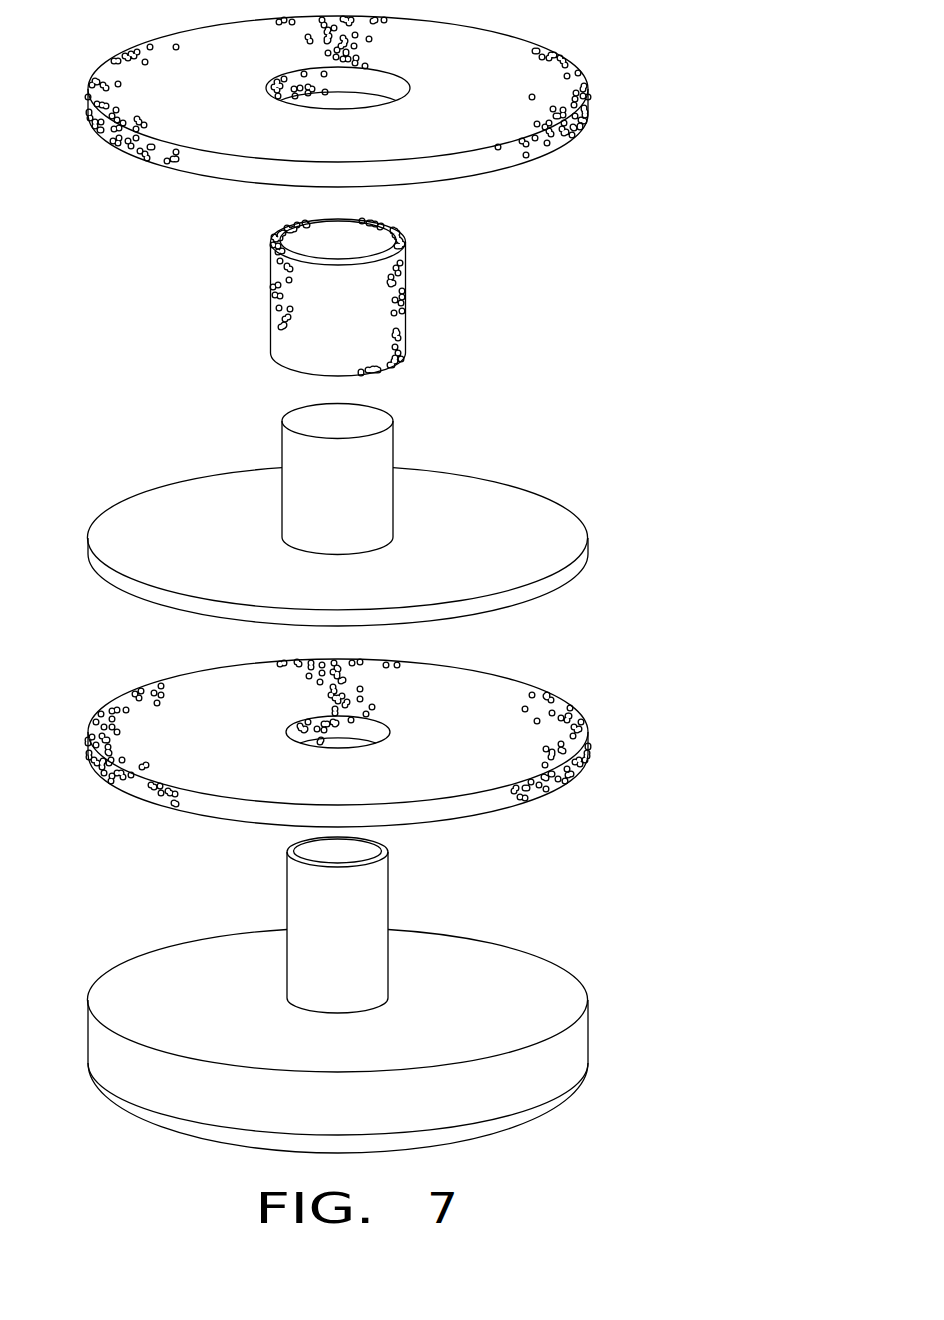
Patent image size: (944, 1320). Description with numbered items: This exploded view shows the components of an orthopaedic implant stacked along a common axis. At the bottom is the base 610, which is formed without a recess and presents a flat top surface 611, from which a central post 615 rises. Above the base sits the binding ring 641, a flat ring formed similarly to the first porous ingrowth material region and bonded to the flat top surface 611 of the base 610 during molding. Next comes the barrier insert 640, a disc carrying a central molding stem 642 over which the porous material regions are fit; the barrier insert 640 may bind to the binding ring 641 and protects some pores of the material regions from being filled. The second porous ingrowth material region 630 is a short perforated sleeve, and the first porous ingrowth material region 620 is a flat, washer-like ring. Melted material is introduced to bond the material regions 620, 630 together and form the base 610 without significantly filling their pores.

The base 610 is at (388, 995).
The flat top surface 611 is at (503, 958).
The post 615 is at (380, 893).
The first porous ingrowth material region 620 is at (597, 103).
The second porous ingrowth material region 630 is at (410, 296).
The barrier insert 640 is at (365, 515).
The binding ring 641 is at (535, 708).
The molding stem 642 is at (387, 450).